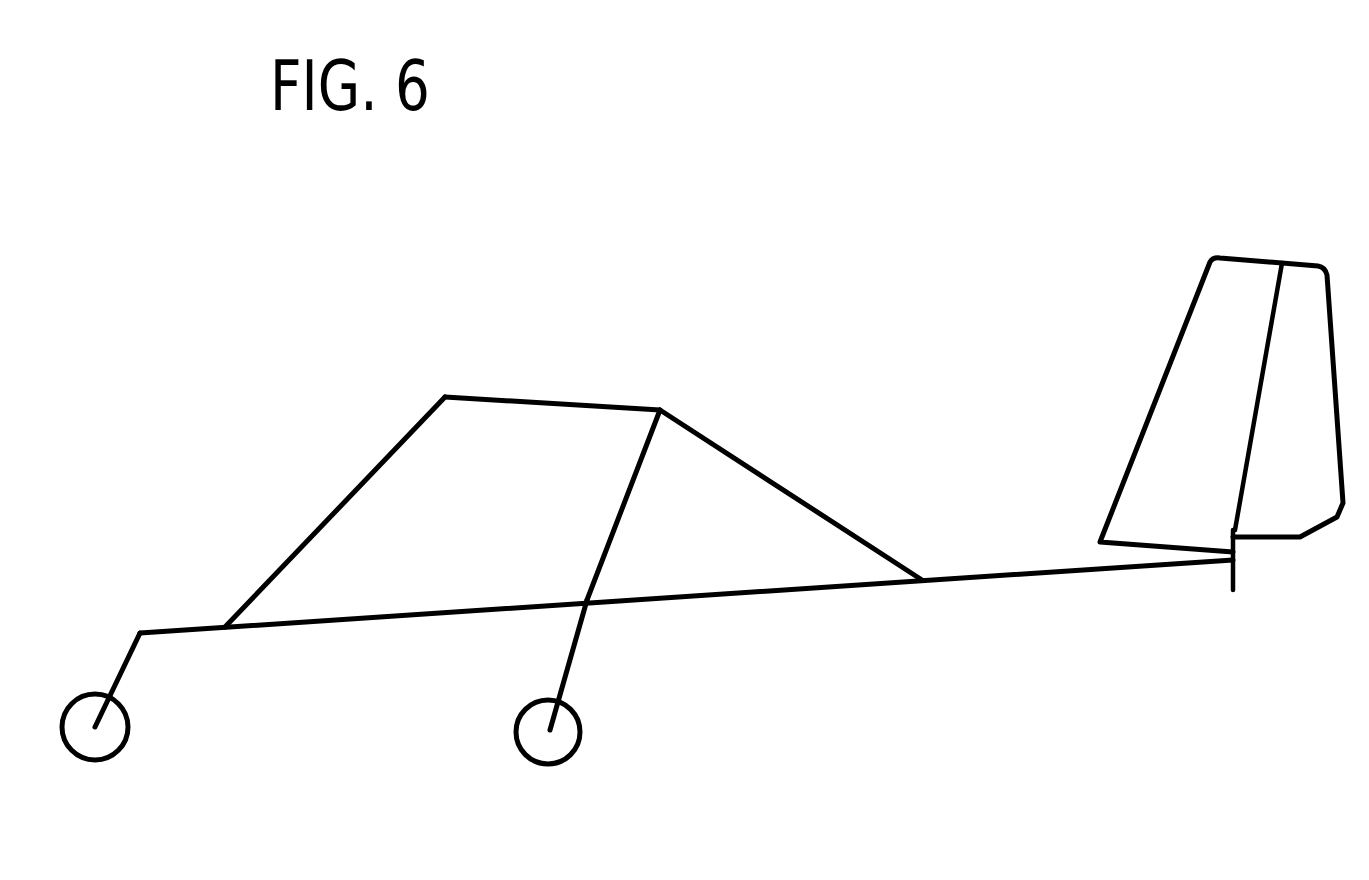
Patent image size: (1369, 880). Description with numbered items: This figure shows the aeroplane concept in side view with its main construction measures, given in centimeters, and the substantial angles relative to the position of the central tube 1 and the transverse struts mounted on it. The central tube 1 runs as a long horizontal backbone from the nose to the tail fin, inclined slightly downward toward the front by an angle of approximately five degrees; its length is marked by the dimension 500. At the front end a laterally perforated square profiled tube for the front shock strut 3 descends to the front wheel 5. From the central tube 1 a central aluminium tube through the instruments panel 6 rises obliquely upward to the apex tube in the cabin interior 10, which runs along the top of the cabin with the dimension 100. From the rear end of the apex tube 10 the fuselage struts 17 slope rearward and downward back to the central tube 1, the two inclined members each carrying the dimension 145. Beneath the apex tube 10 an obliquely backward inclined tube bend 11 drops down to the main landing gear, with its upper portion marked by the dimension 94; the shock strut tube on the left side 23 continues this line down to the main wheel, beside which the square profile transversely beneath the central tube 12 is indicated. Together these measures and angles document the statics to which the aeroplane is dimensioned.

The central tube 1 is at (997, 582).
The laterally perforated square profiled tube for front shock strut 3 is at (125, 657).
The front wheel 5 is at (108, 737).
The central aluminium tube through instruments panel 6 is at (370, 470).
The apex tube in the cabin interior 10 is at (573, 404).
The obliquely backward inclined tube bend 11 is at (640, 467).
The square profile transversely beneath the central tube 12 is at (590, 755).
The fuselage struts 17 is at (740, 463).
The shock strut tube on the left side 23 is at (565, 668).
The strut length dimension 94 is at (629, 505).
The beam length dimension 100 is at (552, 357).
The inclined member length dimension 145 is at (573, 481).
The fuselage length dimension 500 is at (741, 496).